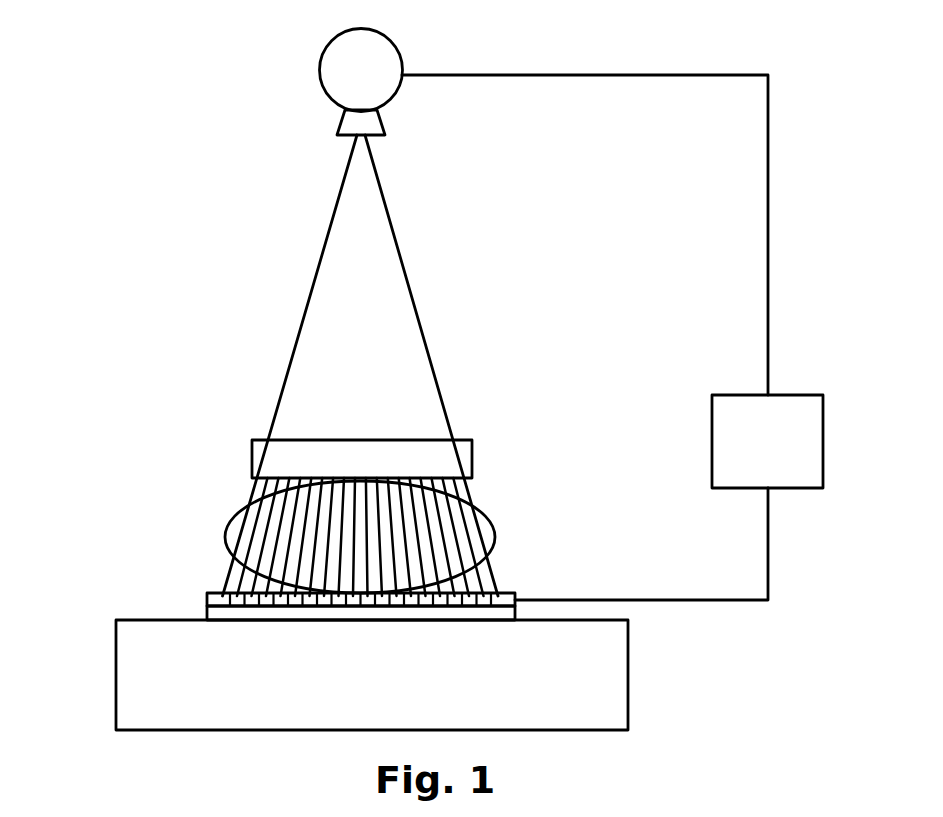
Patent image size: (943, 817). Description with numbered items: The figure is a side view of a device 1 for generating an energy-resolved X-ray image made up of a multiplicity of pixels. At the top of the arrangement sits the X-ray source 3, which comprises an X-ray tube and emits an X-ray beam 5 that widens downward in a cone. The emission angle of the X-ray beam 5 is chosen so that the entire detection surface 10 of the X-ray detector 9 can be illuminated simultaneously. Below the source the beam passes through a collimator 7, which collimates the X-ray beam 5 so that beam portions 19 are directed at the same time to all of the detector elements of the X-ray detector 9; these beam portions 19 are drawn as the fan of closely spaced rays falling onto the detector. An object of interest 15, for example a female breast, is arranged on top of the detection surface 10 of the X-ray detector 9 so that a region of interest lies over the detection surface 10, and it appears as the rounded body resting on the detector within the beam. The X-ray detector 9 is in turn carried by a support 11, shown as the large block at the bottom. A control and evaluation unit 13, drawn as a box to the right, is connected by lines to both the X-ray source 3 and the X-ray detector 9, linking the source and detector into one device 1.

The device for generating an energy-resolved X-ray image 1 is at (181, 268).
The X-ray source 3 is at (340, 70).
The X-ray beam 5 is at (344, 248).
The collimator 7 is at (258, 452).
The X-ray detector 9 is at (208, 606).
The detection surface 10 is at (220, 592).
The support 11 is at (117, 657).
The control and evaluation unit 13 is at (790, 395).
The object of interest 15 is at (242, 533).
The beam portions 19 is at (474, 535).